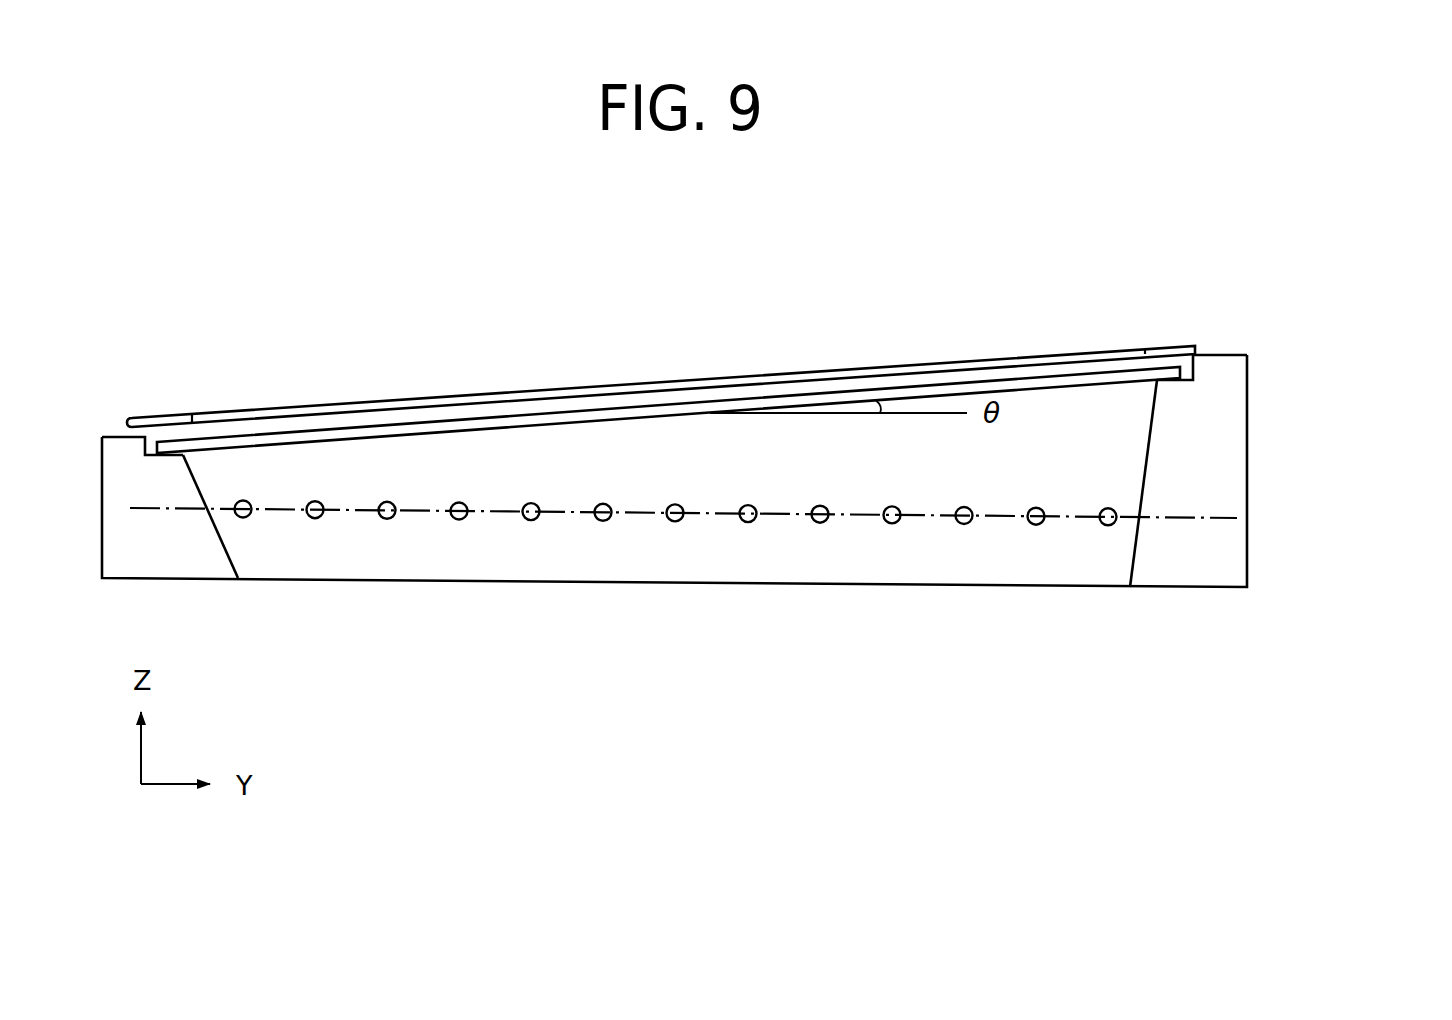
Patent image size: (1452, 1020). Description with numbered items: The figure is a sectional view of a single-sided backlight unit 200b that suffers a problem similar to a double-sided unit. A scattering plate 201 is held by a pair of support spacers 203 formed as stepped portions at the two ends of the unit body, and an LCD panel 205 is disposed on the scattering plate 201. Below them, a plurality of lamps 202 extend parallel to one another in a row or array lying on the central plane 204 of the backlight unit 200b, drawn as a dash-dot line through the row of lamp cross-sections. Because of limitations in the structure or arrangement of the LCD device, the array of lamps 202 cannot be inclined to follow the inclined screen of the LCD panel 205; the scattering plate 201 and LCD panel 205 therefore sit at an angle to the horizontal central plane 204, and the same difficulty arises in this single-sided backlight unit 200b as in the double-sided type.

The single-sided backlight unit 200b is at (1282, 380).
The scattering plate 201 is at (792, 394).
The lamps 202 is at (609, 503).
The support spacers 203 is at (117, 437).
The central plane 204 is at (1208, 516).
The LCD panel 205 is at (340, 404).